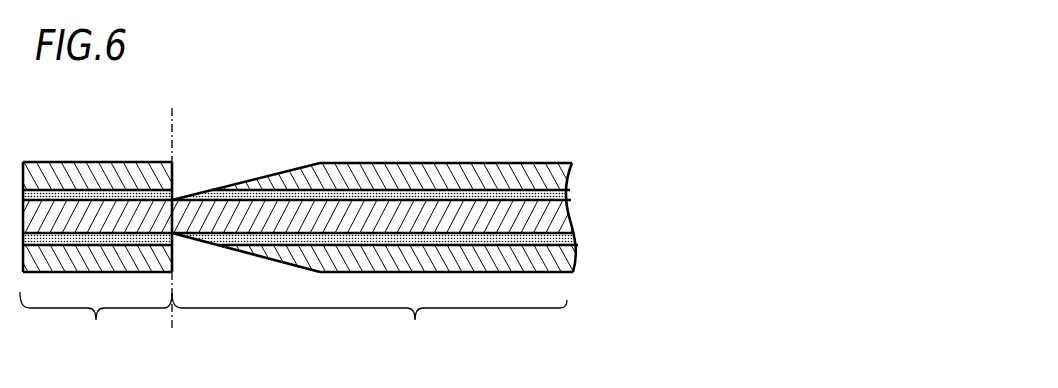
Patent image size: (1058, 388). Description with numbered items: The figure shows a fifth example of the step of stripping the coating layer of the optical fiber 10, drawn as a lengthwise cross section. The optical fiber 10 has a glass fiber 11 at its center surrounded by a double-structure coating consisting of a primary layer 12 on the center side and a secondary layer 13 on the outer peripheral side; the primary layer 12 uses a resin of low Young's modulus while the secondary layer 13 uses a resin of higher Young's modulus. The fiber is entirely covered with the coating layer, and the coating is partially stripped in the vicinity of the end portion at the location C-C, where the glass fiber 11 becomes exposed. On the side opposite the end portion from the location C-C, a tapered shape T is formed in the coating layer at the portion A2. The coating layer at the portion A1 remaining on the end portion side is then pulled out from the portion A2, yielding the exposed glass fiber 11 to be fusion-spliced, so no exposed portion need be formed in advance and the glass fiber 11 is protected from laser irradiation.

The optical fiber 10 is at (365, 190).
The glass fiber 11 is at (557, 218).
The primary layer 12 is at (568, 193).
The secondary layer 13 is at (558, 173).
The tapered shape T is at (258, 180).
The location C- C is at (171, 217).
The portion A1 is at (96, 324).
The portion A2 is at (369, 323).